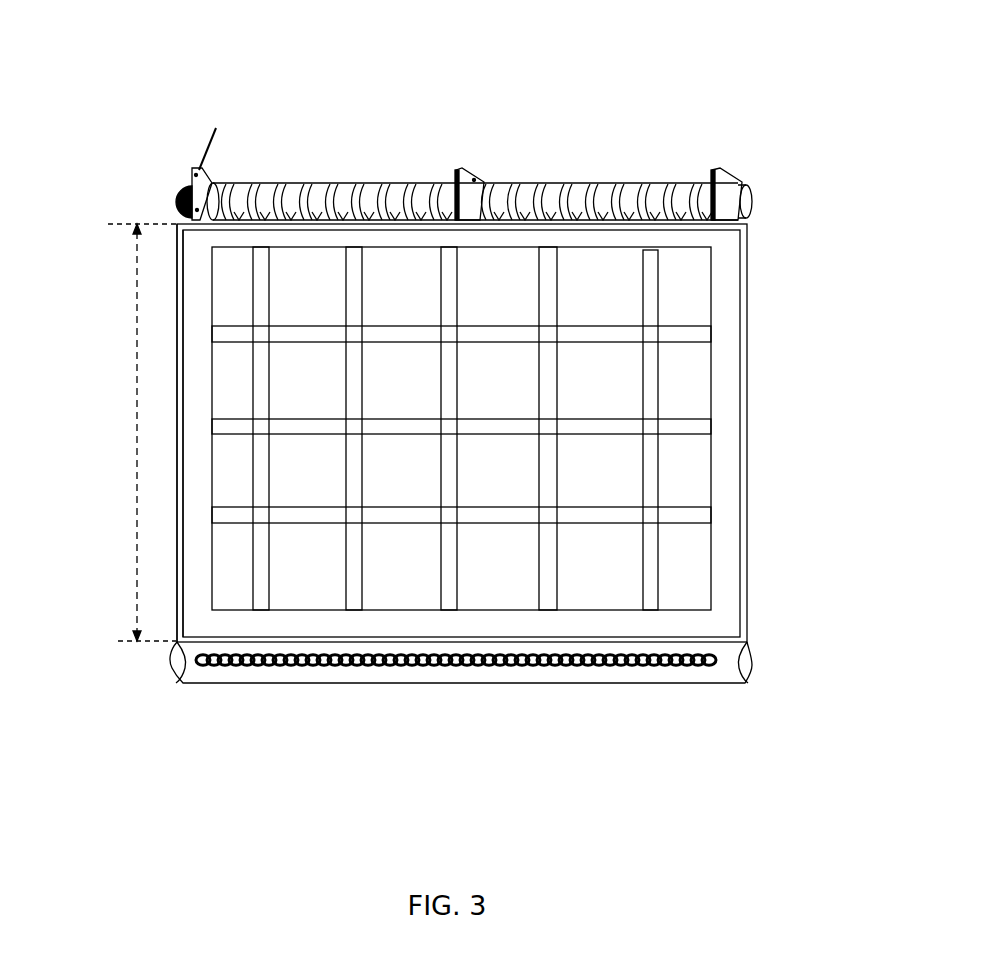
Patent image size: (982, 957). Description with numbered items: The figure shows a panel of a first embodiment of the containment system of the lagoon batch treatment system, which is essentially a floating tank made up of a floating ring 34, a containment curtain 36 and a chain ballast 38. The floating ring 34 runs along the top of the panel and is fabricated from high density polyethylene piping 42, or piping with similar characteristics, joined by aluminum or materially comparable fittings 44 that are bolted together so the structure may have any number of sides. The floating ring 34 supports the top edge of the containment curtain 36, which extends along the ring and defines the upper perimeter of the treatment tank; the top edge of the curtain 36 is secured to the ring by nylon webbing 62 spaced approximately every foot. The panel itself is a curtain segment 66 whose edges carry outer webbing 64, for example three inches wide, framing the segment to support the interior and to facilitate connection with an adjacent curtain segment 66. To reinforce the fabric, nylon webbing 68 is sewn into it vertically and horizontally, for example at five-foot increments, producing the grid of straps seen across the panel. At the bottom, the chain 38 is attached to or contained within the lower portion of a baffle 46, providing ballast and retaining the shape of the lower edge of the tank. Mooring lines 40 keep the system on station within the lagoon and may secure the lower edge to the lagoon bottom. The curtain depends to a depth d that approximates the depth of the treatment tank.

The floating ring 34 is at (534, 146).
The containment curtain 36 is at (684, 467).
The chain ballast 38 is at (200, 661).
The mooring lines 40 is at (198, 155).
The HDPE piping 42 is at (323, 186).
The fittings 44 is at (463, 190).
The baffle 46 is at (728, 656).
The nylon webbing 62 is at (624, 182).
The outer webbing 64 is at (178, 476).
The curtain segment 66 is at (717, 401).
The nylon webbing 68 is at (655, 357).